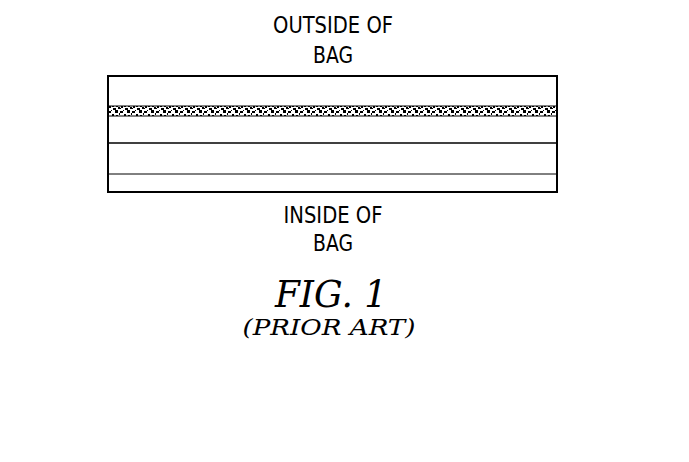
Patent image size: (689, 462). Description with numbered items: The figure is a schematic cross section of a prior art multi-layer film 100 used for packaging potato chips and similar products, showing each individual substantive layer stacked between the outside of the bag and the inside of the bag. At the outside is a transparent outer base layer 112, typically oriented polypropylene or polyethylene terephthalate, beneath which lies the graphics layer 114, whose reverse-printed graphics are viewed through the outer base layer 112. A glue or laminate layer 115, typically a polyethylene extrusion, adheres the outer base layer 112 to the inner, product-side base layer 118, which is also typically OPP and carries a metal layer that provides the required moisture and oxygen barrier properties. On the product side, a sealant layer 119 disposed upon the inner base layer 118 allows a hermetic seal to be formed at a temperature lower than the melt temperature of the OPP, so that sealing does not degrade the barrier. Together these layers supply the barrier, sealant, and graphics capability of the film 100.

The multi-layer film 100 is at (130, 60).
The outer base layer 112 is at (503, 76).
The graphics layer 114 is at (108, 110).
The glue or laminate layer 115 is at (558, 126).
The inner base layer 118 is at (558, 157).
The sealant layer 119 is at (558, 190).